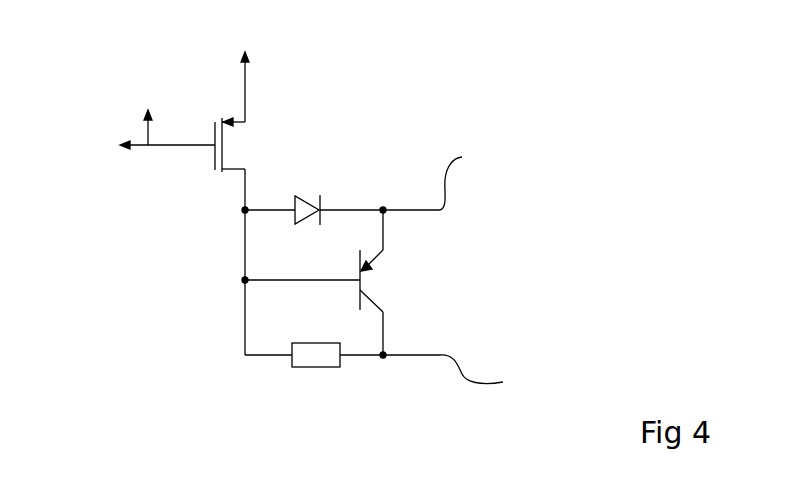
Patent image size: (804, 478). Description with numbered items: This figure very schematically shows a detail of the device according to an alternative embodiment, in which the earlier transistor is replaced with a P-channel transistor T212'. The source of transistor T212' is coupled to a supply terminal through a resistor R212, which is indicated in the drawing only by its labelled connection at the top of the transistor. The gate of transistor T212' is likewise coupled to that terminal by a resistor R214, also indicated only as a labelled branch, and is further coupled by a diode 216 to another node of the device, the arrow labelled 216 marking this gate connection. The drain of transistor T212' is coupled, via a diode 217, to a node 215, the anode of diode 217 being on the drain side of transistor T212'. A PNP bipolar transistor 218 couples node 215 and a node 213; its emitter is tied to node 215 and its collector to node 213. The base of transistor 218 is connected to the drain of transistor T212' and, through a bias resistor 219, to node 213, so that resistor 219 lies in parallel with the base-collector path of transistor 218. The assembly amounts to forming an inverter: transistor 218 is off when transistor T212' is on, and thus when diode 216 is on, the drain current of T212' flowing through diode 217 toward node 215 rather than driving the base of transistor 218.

The resistor R212 is at (243, 75).
The resistor R214 is at (154, 114).
The P-channel transistor T212' is at (252, 164).
The diode 216 is at (146, 146).
The diode 217 is at (314, 197).
The bipolar transistor 218 is at (331, 282).
The bias resistor 219 is at (314, 342).
The node 215 is at (443, 179).
The node 213 is at (464, 375).